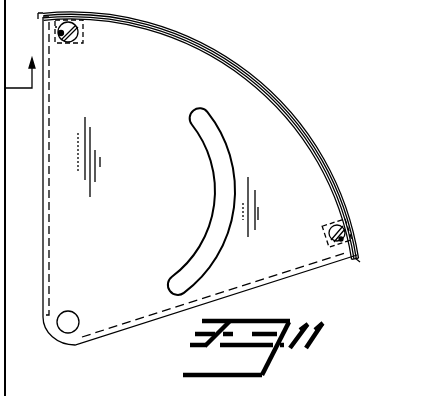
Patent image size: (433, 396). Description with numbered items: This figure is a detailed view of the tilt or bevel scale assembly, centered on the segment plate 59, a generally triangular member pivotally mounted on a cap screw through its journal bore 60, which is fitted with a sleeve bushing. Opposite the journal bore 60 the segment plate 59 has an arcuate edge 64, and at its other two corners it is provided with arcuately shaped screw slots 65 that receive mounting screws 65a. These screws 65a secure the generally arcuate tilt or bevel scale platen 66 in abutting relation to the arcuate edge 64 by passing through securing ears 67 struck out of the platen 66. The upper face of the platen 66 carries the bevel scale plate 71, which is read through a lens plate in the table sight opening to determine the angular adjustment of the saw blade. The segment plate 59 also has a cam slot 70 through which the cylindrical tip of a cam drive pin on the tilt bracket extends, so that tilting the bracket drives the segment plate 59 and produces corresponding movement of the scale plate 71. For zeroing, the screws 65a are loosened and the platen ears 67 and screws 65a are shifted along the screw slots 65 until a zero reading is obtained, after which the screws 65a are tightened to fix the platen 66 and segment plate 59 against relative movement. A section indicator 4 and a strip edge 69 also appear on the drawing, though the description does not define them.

The section line 4 is at (20, 83).
The segment plate 59 is at (133, 200).
The journal bore 60 is at (73, 315).
The arcuate edge 64 is at (329, 174).
The screw slot 65 is at (57, 28).
The mounting screw 65a is at (79, 32).
The tilt or bevel scale platen 66 is at (311, 143).
The securing ear 67 is at (78, 44).
The arcuate strip 69 is at (203, 40).
The cam slot 70 is at (207, 150).
The bevel scale plate 71 is at (233, 62).